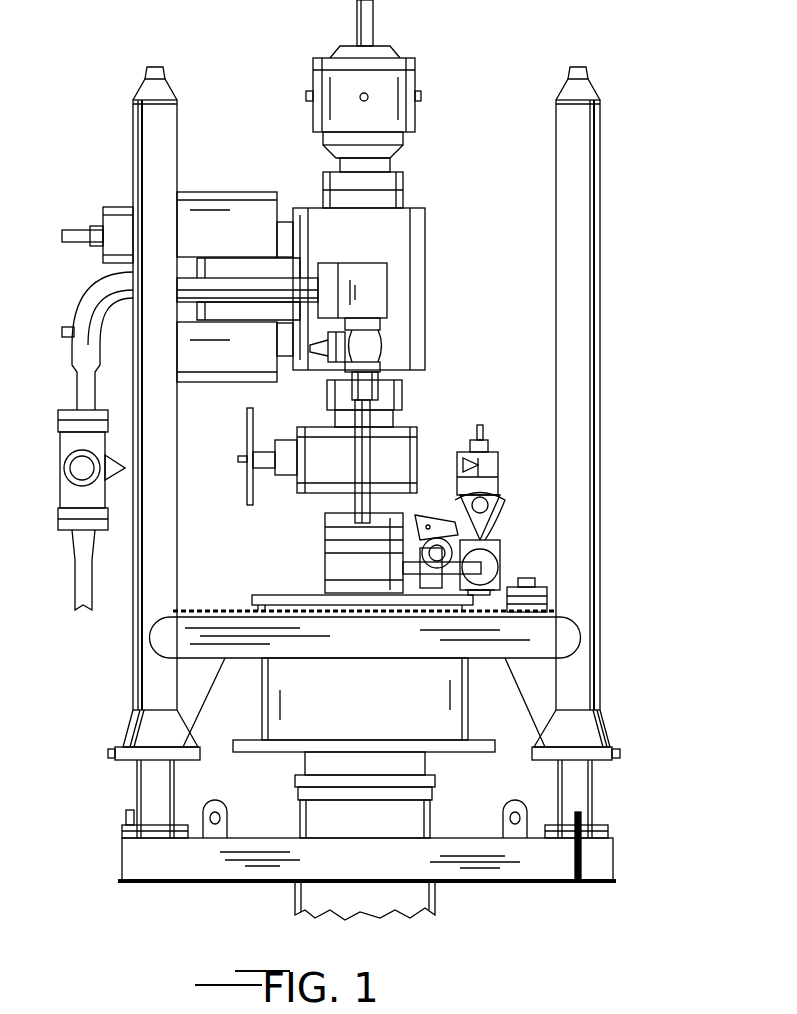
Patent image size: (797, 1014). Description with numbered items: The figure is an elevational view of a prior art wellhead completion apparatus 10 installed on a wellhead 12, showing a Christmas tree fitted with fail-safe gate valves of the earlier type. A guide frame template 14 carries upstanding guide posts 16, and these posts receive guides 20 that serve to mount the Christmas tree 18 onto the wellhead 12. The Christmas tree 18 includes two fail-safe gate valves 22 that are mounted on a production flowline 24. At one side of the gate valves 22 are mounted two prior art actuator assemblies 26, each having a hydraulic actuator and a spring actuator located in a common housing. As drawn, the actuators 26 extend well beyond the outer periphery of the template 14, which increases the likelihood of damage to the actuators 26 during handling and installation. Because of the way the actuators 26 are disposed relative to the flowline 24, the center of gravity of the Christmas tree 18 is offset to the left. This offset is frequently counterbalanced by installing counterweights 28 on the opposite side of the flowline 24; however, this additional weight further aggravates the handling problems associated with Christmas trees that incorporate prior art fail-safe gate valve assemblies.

The wellhead completion apparatus 10 is at (622, 412).
The wellhead 12 is at (436, 900).
The guide frame template 14 is at (205, 865).
The guide posts 16 is at (140, 782).
The Christmas tree 18 is at (428, 86).
The guides 20 is at (583, 318).
The fail-safe gate valves 22 is at (425, 280).
The production flowline 24 is at (393, 420).
The actuator assemblies 26 is at (232, 205).
The counterweights 28 is at (540, 605).